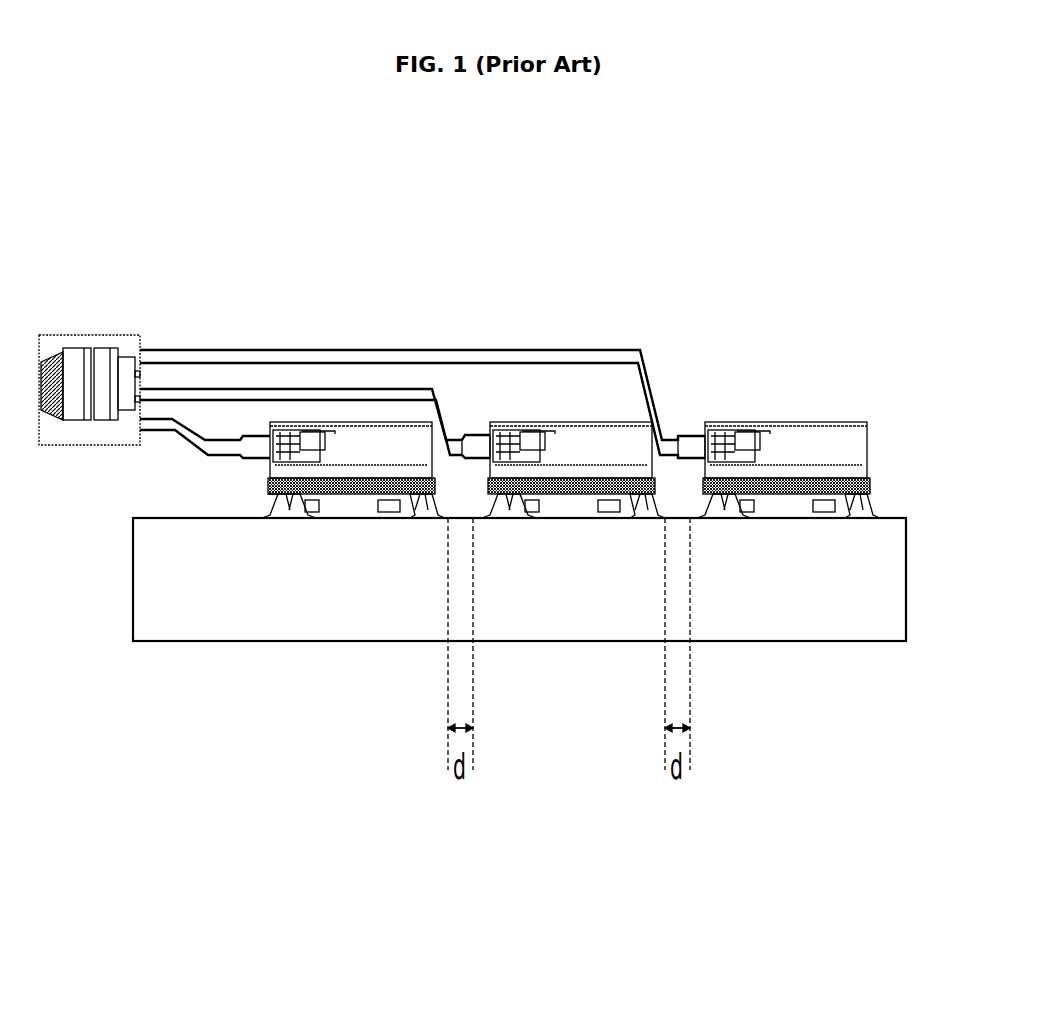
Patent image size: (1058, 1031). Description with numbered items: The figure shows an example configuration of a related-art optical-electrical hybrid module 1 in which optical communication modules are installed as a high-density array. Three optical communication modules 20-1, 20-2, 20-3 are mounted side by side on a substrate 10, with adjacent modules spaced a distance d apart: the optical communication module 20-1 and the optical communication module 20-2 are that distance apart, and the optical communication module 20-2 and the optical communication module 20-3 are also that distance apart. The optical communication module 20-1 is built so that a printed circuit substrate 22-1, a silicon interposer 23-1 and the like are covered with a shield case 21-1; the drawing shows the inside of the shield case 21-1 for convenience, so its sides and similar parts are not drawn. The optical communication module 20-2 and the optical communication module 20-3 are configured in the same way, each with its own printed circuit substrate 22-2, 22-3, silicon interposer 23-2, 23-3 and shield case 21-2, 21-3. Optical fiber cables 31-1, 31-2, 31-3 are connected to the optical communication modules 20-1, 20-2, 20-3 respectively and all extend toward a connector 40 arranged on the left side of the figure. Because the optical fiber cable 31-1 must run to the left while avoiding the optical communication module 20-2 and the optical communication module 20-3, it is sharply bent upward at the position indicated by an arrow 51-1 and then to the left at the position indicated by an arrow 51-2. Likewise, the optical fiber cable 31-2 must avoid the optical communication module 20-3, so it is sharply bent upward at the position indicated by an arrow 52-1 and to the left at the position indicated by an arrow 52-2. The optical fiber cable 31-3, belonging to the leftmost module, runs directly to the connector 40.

The optical-electrical hybrid module 1 is at (572, 882).
The substrate 10 is at (906, 605).
The connector 40 is at (95, 335).
The optical fiber cable 31-1 is at (197, 350).
The optical fiber cable 31-2 is at (236, 389).
The optical fiber cable 31-3 is at (185, 438).
The arrow 51-1 is at (669, 428).
The arrow 51-2 is at (655, 420).
The arrow 52-1 is at (452, 428).
The arrow 52-2 is at (440, 398).
The optical communication module 20-1 is at (788, 488).
The optical communication module 20-2 is at (573, 469).
The optical communication module 20-3 is at (353, 469).
The shield case 21-1 is at (783, 422).
The shield case 21-2 is at (567, 422).
The shield case 21-3 is at (343, 422).
The printed circuit substrate 22-1 is at (843, 518).
The printed circuit substrate 22-2 is at (626, 518).
The printed circuit substrate 22-3 is at (408, 518).
The silicon interposer 23-1 is at (745, 430).
The silicon interposer 23-2 is at (521, 430).
The silicon interposer 23-3 is at (301, 430).